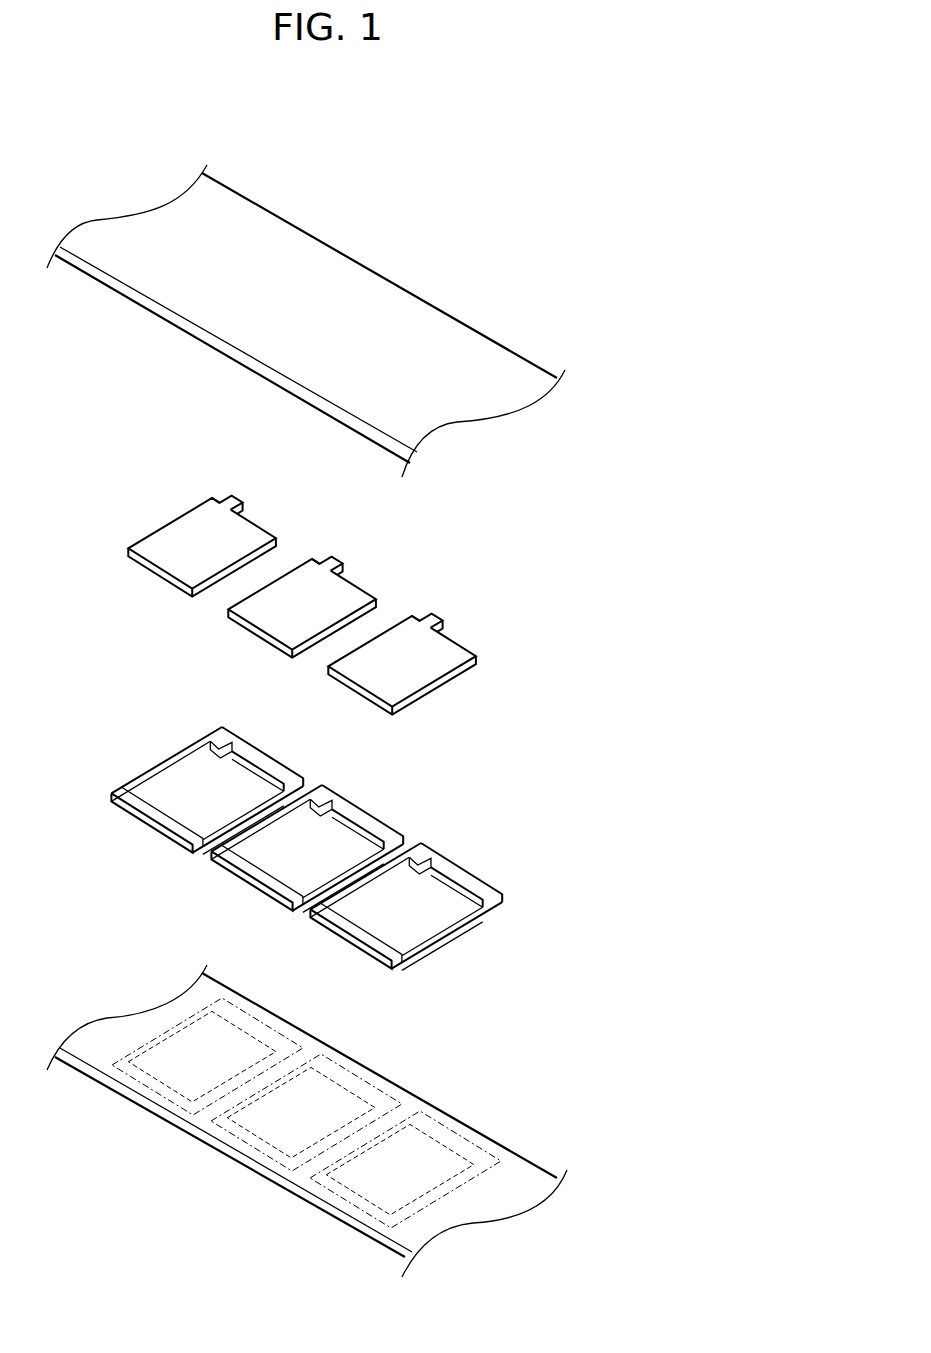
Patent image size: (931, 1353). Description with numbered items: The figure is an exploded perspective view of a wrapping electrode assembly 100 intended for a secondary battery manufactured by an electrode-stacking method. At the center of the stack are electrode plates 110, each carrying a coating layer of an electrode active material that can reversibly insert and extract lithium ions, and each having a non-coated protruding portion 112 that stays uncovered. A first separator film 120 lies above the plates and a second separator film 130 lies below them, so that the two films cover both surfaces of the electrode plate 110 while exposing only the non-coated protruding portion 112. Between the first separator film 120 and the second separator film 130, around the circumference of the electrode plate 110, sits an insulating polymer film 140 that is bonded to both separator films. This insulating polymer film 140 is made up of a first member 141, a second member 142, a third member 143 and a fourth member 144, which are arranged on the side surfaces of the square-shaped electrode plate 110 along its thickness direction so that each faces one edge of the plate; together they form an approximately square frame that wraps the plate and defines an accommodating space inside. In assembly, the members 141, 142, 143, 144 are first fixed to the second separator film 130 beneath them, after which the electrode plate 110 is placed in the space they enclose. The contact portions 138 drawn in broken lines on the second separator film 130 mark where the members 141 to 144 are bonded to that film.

The wrapping electrode assembly 100 is at (426, 199).
The electrode plate 110 is at (365, 677).
The non-coated protruding portion 112 is at (235, 505).
The first separator film 120 is at (408, 315).
The second separator film 130 is at (523, 1167).
The contact portions 138 is at (253, 1022).
The insulating polymer film 140 is at (339, 857).
The first member 141 is at (262, 758).
The second member 142 is at (162, 763).
The third member 143 is at (443, 932).
The fourth member 144 is at (347, 922).